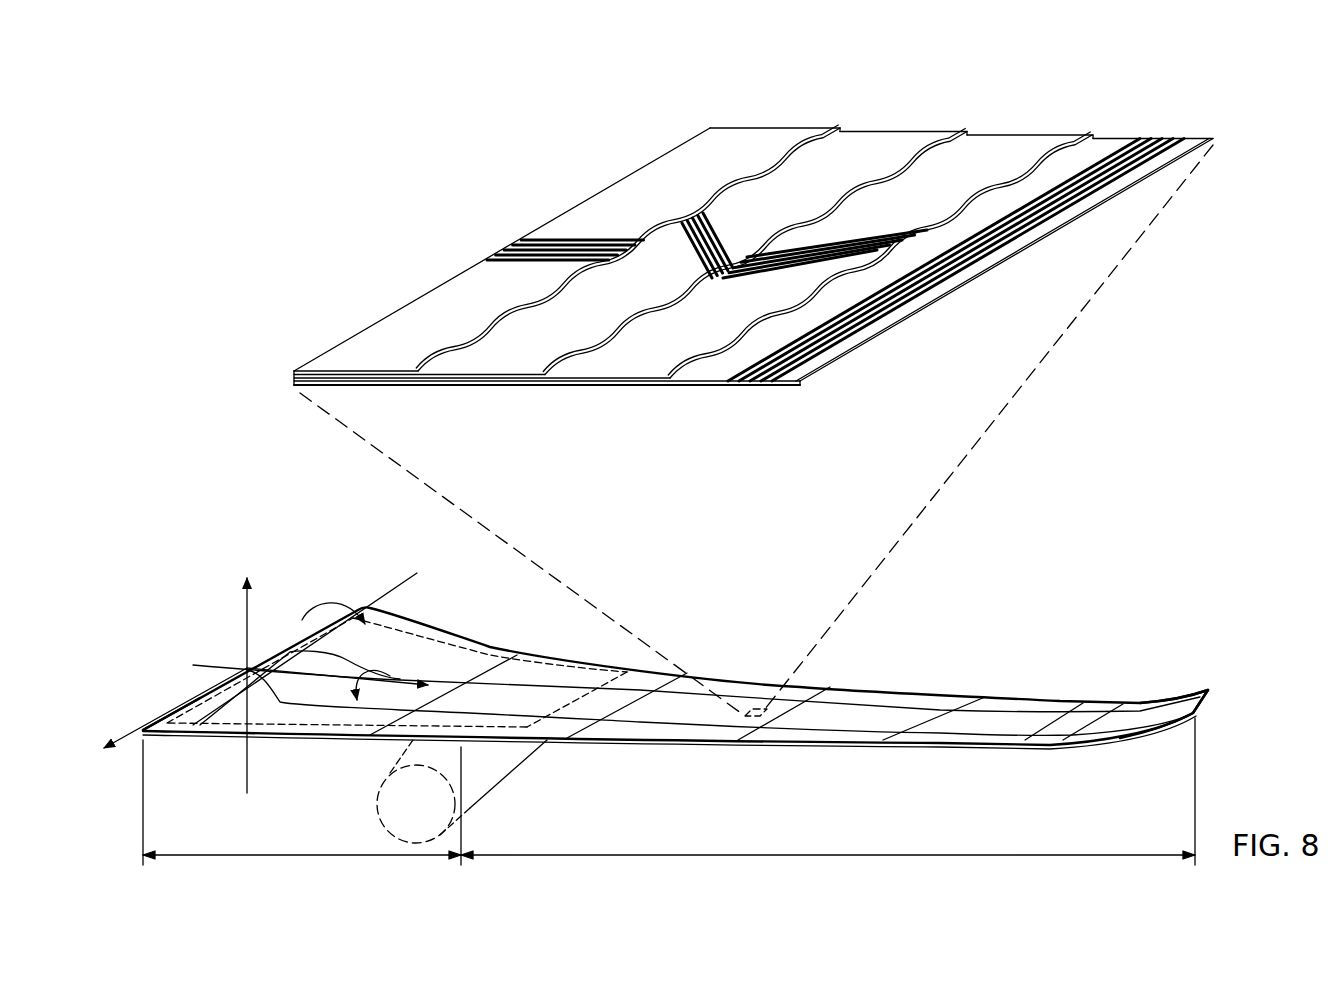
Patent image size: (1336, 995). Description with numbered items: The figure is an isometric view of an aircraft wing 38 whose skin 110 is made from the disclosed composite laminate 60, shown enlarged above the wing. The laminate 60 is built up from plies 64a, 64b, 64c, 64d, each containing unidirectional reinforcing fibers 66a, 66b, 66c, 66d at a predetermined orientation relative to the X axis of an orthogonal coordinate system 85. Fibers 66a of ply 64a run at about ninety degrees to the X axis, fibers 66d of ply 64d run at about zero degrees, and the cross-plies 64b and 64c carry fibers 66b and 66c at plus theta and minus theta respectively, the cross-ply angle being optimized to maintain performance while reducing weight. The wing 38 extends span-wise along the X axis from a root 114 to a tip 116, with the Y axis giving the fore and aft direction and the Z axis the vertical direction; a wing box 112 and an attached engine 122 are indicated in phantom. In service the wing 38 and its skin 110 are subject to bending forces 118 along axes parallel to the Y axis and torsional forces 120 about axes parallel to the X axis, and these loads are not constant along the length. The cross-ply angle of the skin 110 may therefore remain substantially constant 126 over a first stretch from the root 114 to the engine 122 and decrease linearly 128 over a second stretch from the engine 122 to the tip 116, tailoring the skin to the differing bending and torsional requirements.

The aircraft wing 38 is at (616, 590).
The composite laminate 60 is at (753, 234).
The ply 64a is at (753, 236).
The ply 64b is at (631, 231).
The ply 64c is at (694, 234).
The ply 64d is at (568, 229).
The reinforcing fibers 66a is at (913, 300).
The reinforcing fibers 66b is at (703, 253).
The reinforcing fibers 66c is at (757, 276).
The reinforcing fibers 66d is at (510, 262).
The orthogonal coordinate system 85 is at (197, 590).
The skin 110 is at (675, 661).
The wing box 112 is at (574, 705).
The root 114 is at (158, 703).
The tip 116 is at (1195, 673).
The bending forces 118 is at (337, 600).
The torsional forces 120 is at (390, 676).
The engine 122 is at (378, 815).
The constant cross-ply angle stretch 126 is at (300, 857).
The linearly decreasing cross-ply angle stretch 128 is at (832, 857).